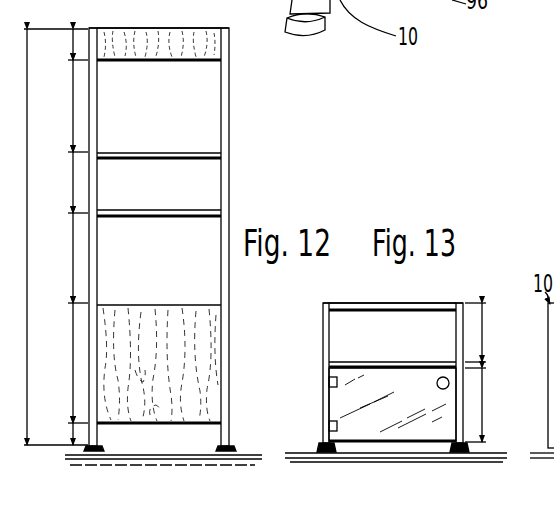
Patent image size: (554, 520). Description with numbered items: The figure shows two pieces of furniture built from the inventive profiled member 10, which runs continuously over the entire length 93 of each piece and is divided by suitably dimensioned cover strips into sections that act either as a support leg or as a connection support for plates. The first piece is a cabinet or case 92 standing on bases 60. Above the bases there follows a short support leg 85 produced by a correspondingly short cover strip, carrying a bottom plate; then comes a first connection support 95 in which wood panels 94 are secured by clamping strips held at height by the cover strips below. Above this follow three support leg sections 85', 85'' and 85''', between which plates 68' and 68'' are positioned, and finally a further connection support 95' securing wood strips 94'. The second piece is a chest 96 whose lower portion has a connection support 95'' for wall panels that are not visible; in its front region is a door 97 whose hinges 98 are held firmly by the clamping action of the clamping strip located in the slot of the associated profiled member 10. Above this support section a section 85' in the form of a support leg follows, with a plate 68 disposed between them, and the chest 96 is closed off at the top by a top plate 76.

In FIG. 12, the profiled member 10 is at (89, 27).
In FIG. 13, the profiled member 10 is at (322, 302).
In FIG. 12, the bases 60 is at (104, 451).
In FIG. 13, the plate 68 is at (392, 343).
In FIG. 12, the plate 68' is at (194, 207).
In FIG. 12, the plate 68'' is at (197, 163).
In FIG. 13, the top plate 76 is at (377, 308).
In FIG. 12, the support leg 85 is at (52, 424).
In FIG. 12, the support leg section 85' is at (52, 258).
In FIG. 13, the support leg section 85' is at (507, 332).
In FIG. 12, the support leg section 85'' is at (52, 182).
In FIG. 12, the support leg section 85''' is at (52, 106).
In FIG. 12, the cabinet or case 92 is at (232, 113).
In FIG. 12, the entire length 93 is at (30, 318).
In FIG. 12, the wood panels 94 is at (189, 365).
In FIG. 12, the wood strips 94' is at (189, 60).
In FIG. 12, the connection support 95 is at (52, 363).
In FIG. 12, the connection support 95' is at (52, 45).
In FIG. 13, the connection support 95'' is at (511, 405).
In FIG. 13, the chest 96 is at (416, 300).
In FIG. 13, the door 97 is at (392, 422).
In FIG. 13, the hinges 98 is at (328, 382).